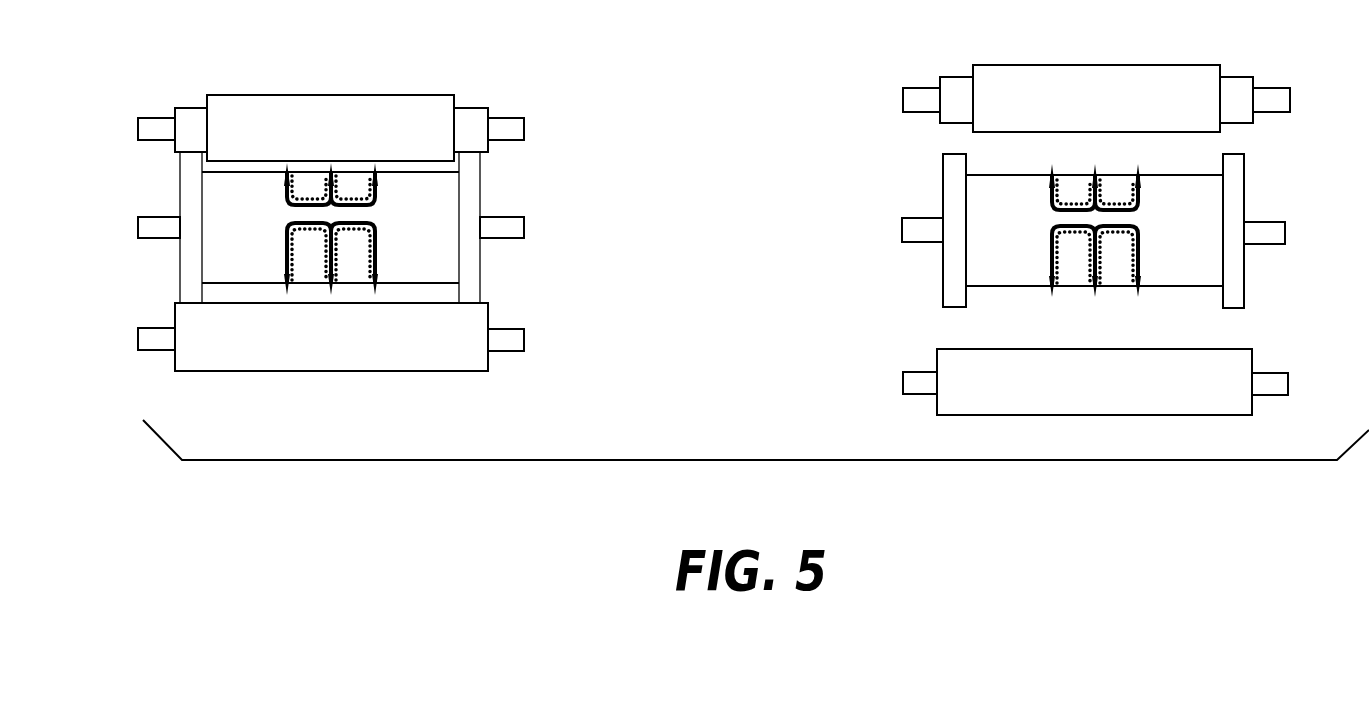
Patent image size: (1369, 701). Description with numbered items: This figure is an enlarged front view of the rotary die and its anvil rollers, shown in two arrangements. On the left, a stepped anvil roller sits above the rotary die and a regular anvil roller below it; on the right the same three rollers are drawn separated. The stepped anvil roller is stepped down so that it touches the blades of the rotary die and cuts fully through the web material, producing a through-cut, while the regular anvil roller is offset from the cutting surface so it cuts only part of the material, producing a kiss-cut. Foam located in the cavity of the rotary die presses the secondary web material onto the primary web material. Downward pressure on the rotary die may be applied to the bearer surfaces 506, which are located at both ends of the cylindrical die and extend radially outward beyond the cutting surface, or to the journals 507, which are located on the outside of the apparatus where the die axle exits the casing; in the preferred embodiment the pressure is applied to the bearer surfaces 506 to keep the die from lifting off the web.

The bearer surfaces 506 is at (945, 155).
The journals 507 is at (1287, 233).